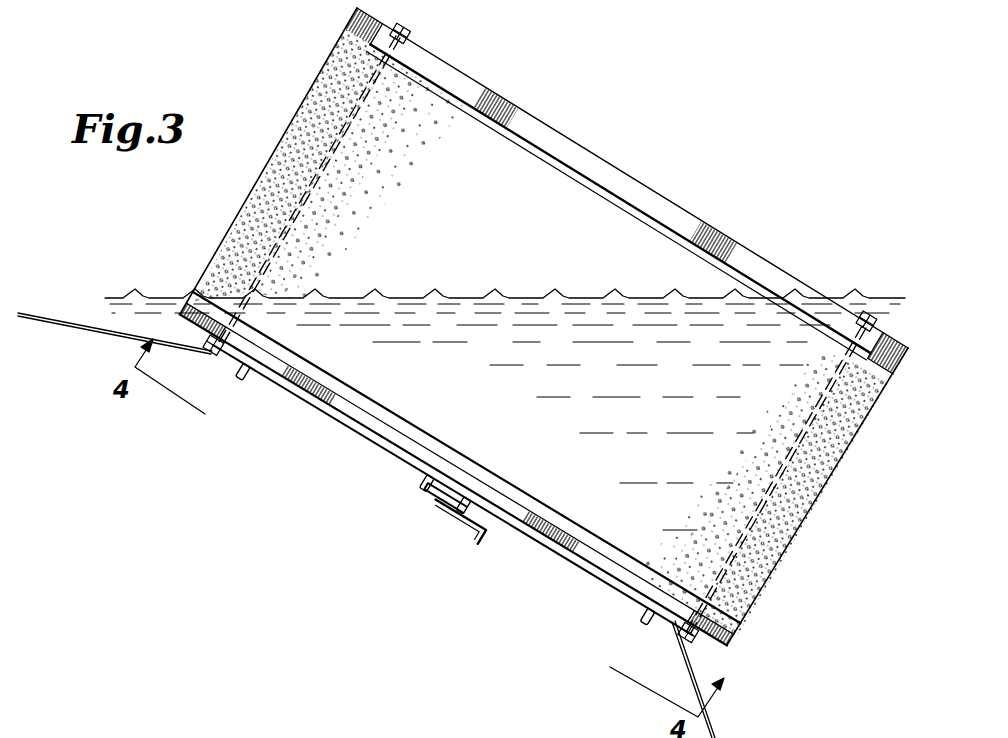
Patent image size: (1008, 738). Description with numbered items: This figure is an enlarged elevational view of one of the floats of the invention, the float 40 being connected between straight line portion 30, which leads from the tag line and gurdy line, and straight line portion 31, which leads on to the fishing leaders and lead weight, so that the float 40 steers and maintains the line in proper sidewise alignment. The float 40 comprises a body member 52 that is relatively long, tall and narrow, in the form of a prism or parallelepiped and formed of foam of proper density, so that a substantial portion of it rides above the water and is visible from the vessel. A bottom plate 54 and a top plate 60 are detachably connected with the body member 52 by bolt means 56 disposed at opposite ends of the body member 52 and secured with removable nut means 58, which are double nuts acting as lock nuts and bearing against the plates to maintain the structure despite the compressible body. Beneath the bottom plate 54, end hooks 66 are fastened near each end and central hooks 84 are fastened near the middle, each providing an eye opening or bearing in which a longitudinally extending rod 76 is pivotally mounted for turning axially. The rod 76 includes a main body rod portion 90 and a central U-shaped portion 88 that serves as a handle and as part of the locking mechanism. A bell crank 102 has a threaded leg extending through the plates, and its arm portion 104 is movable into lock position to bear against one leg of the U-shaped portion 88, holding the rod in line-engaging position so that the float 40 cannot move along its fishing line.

The straight line portion 30 is at (82, 330).
The straight line portion 31 is at (712, 727).
The float 40 is at (686, 178).
The body member 52 is at (520, 246).
The bottom plate 54 is at (520, 520).
The bolt means 56 is at (290, 234).
The nut means 58 is at (412, 22).
The top plate 60 is at (547, 130).
The end hook 66 is at (248, 374).
The longitudinally extending rod 76 is at (369, 450).
The central hook 84 is at (425, 484).
The U-shaped portion 88 is at (436, 497).
The main body rod portion 90 is at (345, 428).
The bell crank 102 is at (443, 534).
The arm portion 104 is at (463, 530).